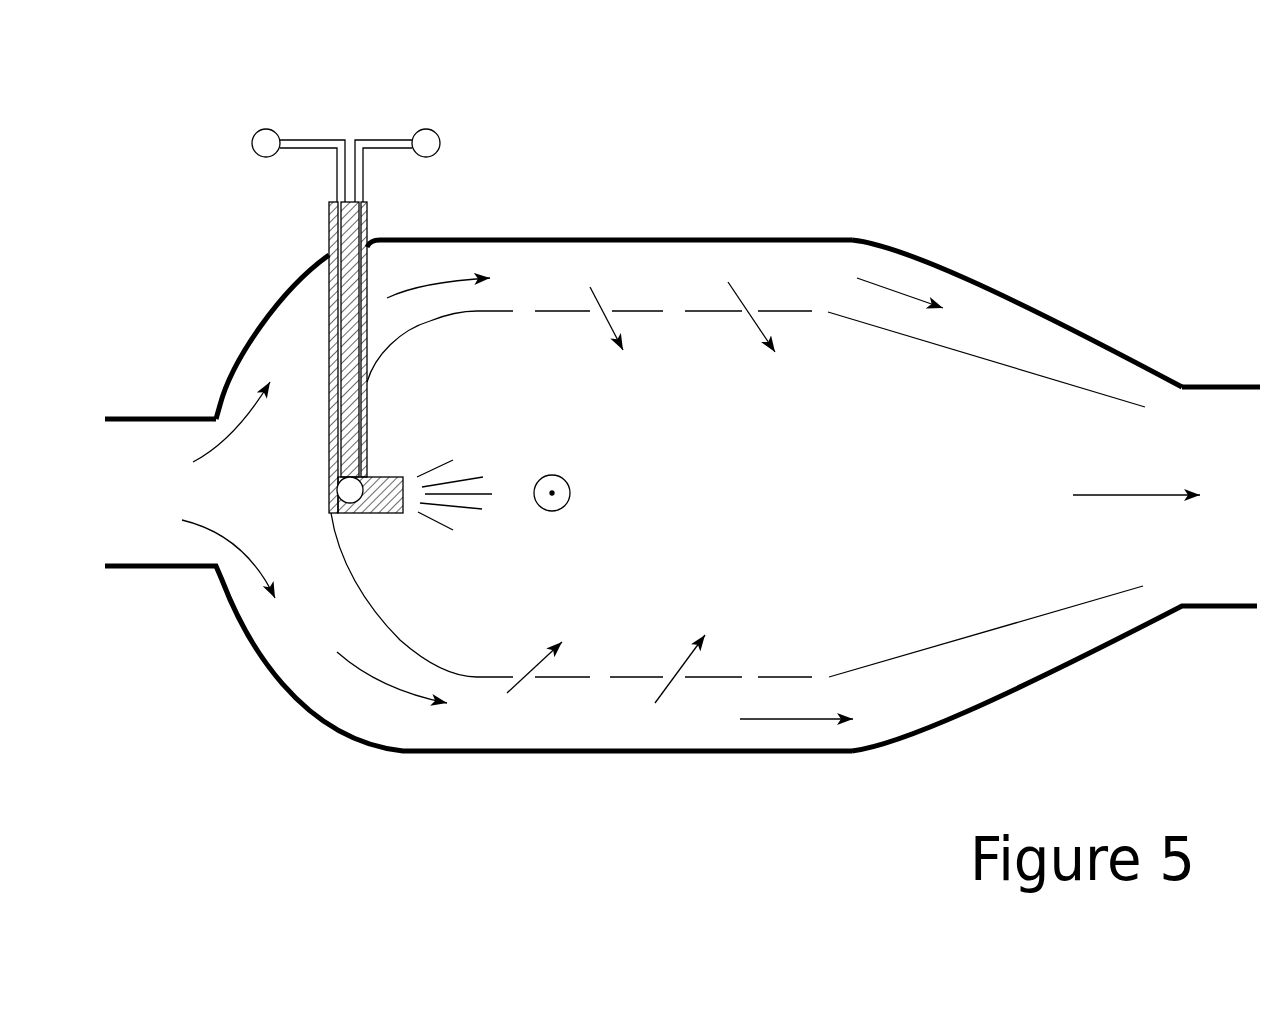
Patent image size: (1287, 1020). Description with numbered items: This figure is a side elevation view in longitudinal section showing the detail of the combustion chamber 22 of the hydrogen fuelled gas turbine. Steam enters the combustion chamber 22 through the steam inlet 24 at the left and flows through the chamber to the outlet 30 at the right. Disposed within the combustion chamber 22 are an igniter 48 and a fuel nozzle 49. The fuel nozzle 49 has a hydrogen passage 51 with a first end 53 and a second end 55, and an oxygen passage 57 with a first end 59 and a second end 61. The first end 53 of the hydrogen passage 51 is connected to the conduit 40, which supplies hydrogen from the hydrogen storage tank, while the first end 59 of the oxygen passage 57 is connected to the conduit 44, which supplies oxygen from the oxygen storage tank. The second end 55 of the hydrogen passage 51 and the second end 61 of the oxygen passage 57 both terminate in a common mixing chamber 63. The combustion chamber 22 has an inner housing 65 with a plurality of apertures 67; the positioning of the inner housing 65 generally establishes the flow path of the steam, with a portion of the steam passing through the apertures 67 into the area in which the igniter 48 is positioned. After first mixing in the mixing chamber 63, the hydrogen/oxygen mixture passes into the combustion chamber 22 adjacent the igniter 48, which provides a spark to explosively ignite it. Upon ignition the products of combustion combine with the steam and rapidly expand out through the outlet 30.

The combustion chamber 22 is at (710, 237).
The steam inlet 24 is at (180, 575).
The outlet 30 is at (1230, 606).
The conduit 40 is at (432, 130).
The conduit 44 is at (258, 131).
The igniter 48 is at (565, 508).
The fuel nozzle 49 is at (397, 513).
The hydrogen passage 51 is at (367, 233).
The first end 53 is at (400, 137).
The second end 55 is at (358, 446).
The oxygen passage 57 is at (330, 257).
The first end 59 is at (288, 138).
The second end 61 is at (335, 458).
The mixing chamber 63 is at (350, 492).
The inner housing 65 is at (495, 303).
The apertures 67 is at (823, 300).